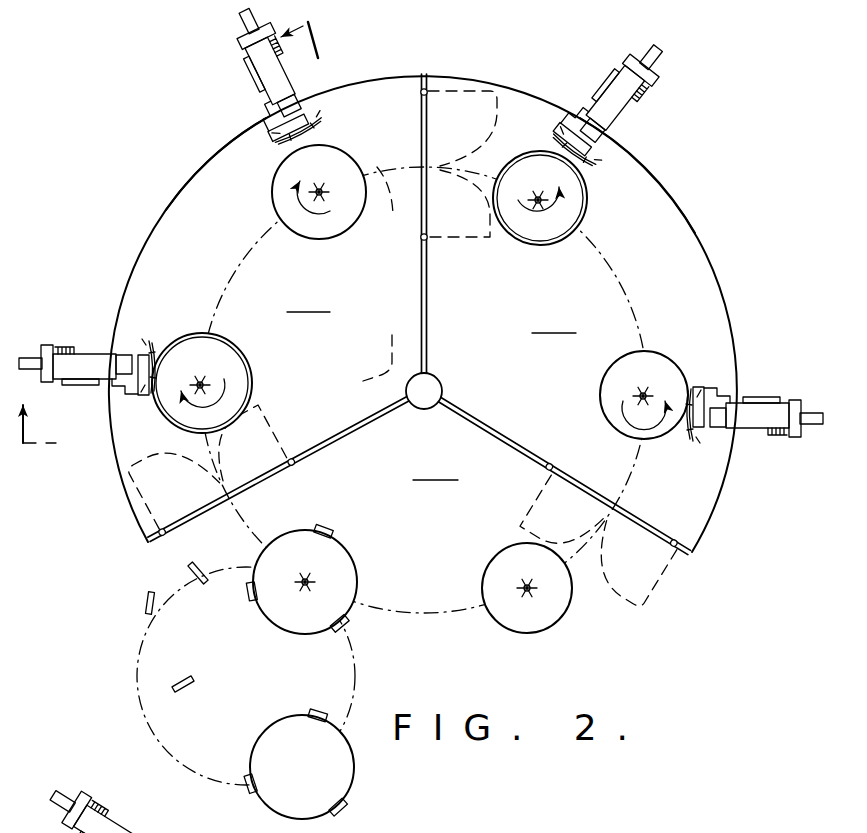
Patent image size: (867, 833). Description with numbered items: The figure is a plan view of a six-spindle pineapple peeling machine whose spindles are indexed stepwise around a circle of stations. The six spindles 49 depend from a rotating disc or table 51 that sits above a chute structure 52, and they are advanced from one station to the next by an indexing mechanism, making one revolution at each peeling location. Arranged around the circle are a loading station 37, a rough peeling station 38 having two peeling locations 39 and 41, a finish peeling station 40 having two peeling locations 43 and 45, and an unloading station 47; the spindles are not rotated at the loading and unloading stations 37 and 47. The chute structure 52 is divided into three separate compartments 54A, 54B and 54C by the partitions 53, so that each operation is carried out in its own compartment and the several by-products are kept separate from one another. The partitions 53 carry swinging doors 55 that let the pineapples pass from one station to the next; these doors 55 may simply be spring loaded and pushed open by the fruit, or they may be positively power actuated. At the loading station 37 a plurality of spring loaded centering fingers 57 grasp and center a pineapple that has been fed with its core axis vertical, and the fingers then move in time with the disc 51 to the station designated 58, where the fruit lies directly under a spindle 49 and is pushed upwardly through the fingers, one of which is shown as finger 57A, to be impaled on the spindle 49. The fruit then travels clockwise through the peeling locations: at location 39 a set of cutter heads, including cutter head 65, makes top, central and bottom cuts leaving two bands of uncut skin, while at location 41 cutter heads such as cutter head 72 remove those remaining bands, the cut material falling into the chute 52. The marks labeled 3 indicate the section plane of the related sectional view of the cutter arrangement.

The section line 3- 3 is at (170, 232).
The loading station 37 is at (369, 730).
The rough peeling station 38 is at (135, 257).
The peeling location 39 is at (258, 362).
The finish peeling station 40 is at (719, 239).
The peeling location 41 is at (341, 242).
The peeling location 43 is at (517, 251).
The peeling location 45 is at (598, 370).
The unloading station 47 is at (503, 546).
The spindle 49 is at (542, 201).
The rotating disc or table 51 is at (463, 615).
The chute structure 52 is at (165, 205).
The partition 53 is at (428, 335).
The compartment 54A is at (437, 465).
The compartment 54B is at (311, 297).
The compartment 54C is at (556, 319).
The swinging door 55 is at (428, 218).
The spring loaded centering finger 57 is at (349, 805).
The centering finger 57A is at (328, 526).
The station 58 is at (359, 546).
The cutter head 65 is at (98, 356).
The cutter head 72 is at (268, 90).